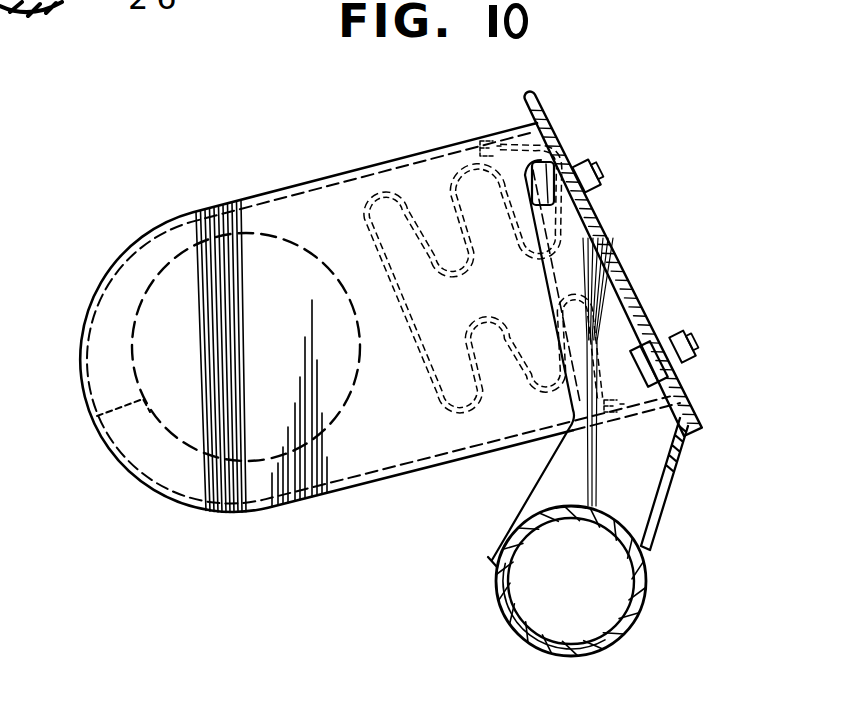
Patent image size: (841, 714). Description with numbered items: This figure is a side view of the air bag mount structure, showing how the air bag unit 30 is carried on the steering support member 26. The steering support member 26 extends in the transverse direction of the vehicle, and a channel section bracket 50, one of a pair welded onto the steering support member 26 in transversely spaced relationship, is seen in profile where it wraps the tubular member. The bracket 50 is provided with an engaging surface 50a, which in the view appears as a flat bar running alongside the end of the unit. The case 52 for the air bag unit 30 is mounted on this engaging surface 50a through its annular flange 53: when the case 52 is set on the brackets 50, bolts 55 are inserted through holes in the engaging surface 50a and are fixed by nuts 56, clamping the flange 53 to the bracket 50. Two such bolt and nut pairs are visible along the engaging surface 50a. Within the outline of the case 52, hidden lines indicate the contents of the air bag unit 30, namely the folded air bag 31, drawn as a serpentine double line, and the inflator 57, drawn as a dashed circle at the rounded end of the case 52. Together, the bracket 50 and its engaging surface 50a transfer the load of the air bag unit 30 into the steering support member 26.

The steering support member 26 is at (498, 599).
The air bag unit 30 is at (388, 164).
The air bag 31 is at (358, 215).
The channel section bracket 50 is at (680, 447).
The engaging surface 50a is at (630, 292).
The case 52 is at (258, 208).
The annular flange 53 is at (605, 252).
The bolt 55 is at (601, 165).
The nut 56 is at (566, 158).
The inflator 57 is at (97, 416).